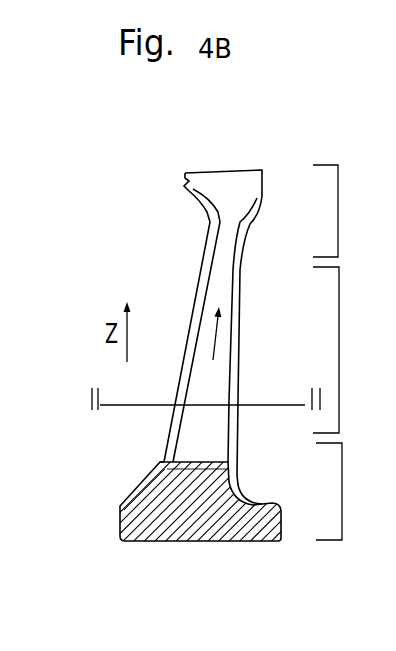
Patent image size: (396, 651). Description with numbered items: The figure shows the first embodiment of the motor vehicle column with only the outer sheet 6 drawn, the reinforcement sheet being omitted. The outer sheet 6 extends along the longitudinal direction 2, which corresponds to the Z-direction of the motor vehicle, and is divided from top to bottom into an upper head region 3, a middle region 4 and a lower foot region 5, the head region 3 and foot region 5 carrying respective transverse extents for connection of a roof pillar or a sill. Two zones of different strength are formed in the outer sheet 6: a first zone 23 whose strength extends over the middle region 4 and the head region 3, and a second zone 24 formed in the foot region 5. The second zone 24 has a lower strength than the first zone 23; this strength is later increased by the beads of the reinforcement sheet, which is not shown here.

The outer sheet 6 is at (85, 208).
The longitudinal direction 2 is at (210, 333).
The head region 3 is at (338, 217).
The middle region 4 is at (339, 360).
The foot region 5 is at (342, 492).
The first zone 23 is at (190, 442).
The second zone 24 is at (147, 521).